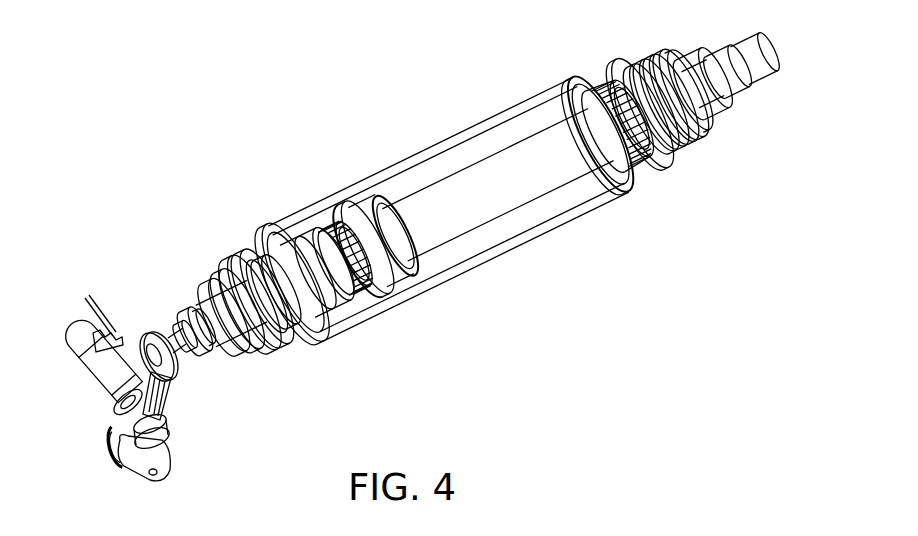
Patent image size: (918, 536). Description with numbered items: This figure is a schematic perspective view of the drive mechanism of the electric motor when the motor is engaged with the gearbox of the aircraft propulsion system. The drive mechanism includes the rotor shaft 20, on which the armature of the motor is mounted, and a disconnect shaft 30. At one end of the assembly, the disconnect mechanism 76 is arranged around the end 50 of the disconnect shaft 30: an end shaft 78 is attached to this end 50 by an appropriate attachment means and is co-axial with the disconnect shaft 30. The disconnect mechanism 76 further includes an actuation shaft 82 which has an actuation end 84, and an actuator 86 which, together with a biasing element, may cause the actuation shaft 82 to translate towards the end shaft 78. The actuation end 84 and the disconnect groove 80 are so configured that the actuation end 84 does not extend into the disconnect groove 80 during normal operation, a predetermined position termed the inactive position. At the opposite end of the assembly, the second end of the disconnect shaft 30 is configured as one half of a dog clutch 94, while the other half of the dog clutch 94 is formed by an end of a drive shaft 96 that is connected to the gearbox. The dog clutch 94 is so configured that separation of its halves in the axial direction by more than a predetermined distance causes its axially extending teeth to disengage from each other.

The rotor shaft 20 is at (487, 283).
The disconnect shaft 30 is at (539, 215).
The end of the disconnect shaft 50 is at (194, 315).
The disconnect mechanism 76 is at (138, 381).
The end shaft 78 is at (159, 329).
The disconnect groove 80 is at (191, 356).
The actuation shaft 82 is at (169, 407).
The actuation end 84 is at (176, 385).
The actuator 86 is at (84, 368).
The dog clutch 94 is at (723, 127).
The drive shaft 96 is at (721, 54).